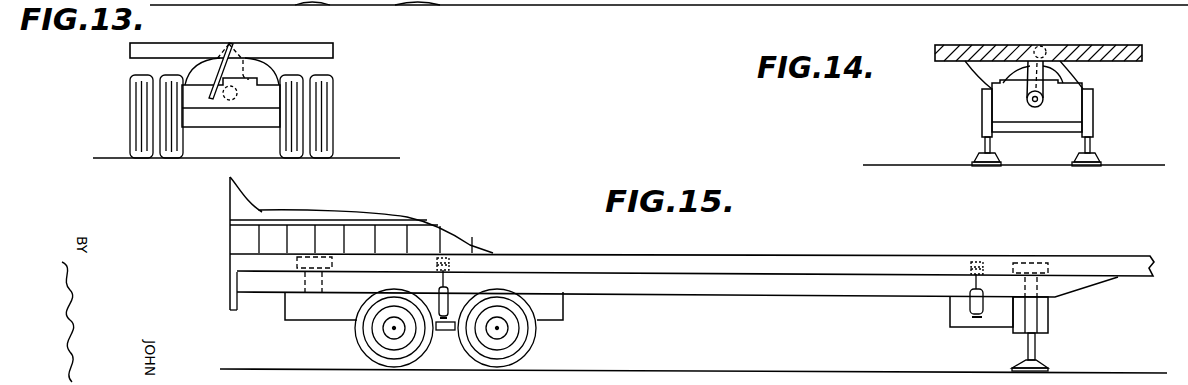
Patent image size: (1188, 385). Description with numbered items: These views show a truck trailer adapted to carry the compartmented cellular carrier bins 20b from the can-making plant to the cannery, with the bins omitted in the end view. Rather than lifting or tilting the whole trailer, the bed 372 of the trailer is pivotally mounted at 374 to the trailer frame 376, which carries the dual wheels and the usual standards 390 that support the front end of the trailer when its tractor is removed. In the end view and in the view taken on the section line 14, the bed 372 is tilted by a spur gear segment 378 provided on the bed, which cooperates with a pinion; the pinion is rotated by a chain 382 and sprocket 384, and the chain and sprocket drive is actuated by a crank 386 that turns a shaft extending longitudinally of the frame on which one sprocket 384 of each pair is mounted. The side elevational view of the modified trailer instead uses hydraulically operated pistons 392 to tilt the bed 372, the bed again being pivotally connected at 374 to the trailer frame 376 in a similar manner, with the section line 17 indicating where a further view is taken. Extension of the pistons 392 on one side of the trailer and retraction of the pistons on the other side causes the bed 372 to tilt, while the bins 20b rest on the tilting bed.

In FIG. 13, the trailer bed 372 is at (336, 44).
In FIG. 14, the trailer bed 372 is at (1095, 44).
In FIG. 15, the trailer bed 372 is at (723, 257).
In FIG. 15, the pivotal mounting 374 is at (299, 258).
In FIG. 13, the trailer frame 376 is at (190, 68).
In FIG. 14, the trailer frame 376 is at (1073, 72).
In FIG. 15, the trailer frame 376 is at (565, 300).
In FIG. 13, the spur gear segment 378 is at (300, 62).
In FIG. 14, the spur gear segment 378 is at (970, 72).
In FIG. 13, the chain 382 is at (251, 96).
In FIG. 14, the chain 382 is at (987, 88).
In FIG. 13, the sprocket 384 is at (229, 42).
In FIG. 14, the sprocket 384 is at (1025, 52).
In FIG. 13, the crank 386 is at (218, 97).
In FIG. 14, the standards 390 is at (1092, 146).
In FIG. 15, the hydraulically operated pistons 392 is at (451, 291).
In FIG. 15, the carrier bins 20b is at (257, 215).
In FIG. 14, the section line 14— 14 is at (810, 15).
In FIG. 15, the section line 17— 17 is at (933, 373).